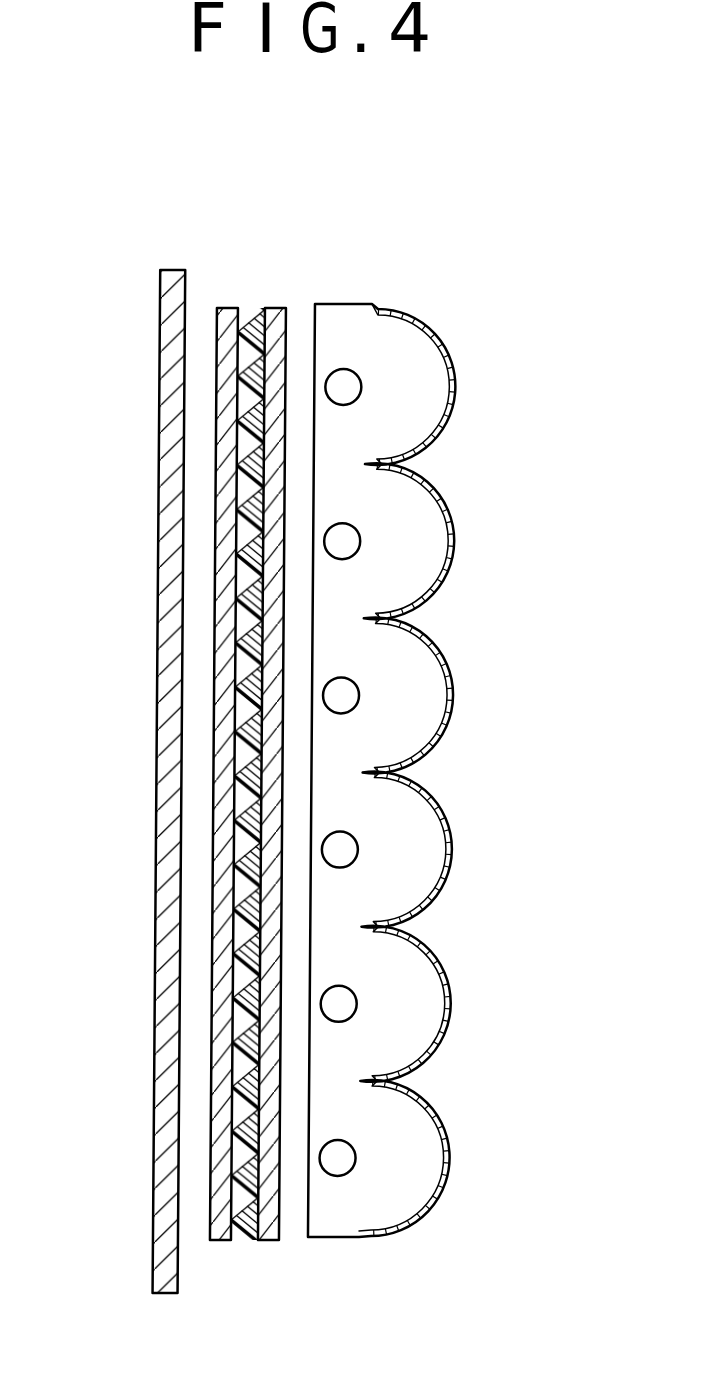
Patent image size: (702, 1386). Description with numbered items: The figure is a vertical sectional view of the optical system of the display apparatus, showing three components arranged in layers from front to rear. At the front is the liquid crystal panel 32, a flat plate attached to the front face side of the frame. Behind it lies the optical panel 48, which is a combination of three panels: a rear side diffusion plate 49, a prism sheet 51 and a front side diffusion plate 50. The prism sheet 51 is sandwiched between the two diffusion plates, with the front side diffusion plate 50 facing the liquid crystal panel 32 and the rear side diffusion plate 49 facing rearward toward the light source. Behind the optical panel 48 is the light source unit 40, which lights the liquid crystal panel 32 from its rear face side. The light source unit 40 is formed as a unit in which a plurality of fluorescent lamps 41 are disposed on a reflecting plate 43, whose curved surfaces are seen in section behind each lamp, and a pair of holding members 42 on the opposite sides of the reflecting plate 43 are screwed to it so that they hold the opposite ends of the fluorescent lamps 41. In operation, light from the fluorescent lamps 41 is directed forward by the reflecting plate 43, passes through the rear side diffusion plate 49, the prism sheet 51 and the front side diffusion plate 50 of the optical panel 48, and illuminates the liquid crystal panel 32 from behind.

The liquid crystal panel 32 is at (160, 738).
The light source unit 40 is at (427, 707).
The fluorescent lamps 41 is at (360, 697).
The holding members 42 is at (395, 853).
The reflecting plate 43 is at (455, 540).
The optical panel 48 is at (292, 708).
The rear side diffusion plate 49 is at (270, 968).
The front side diffusion plate 50 is at (220, 913).
The prism sheet 51 is at (248, 500).